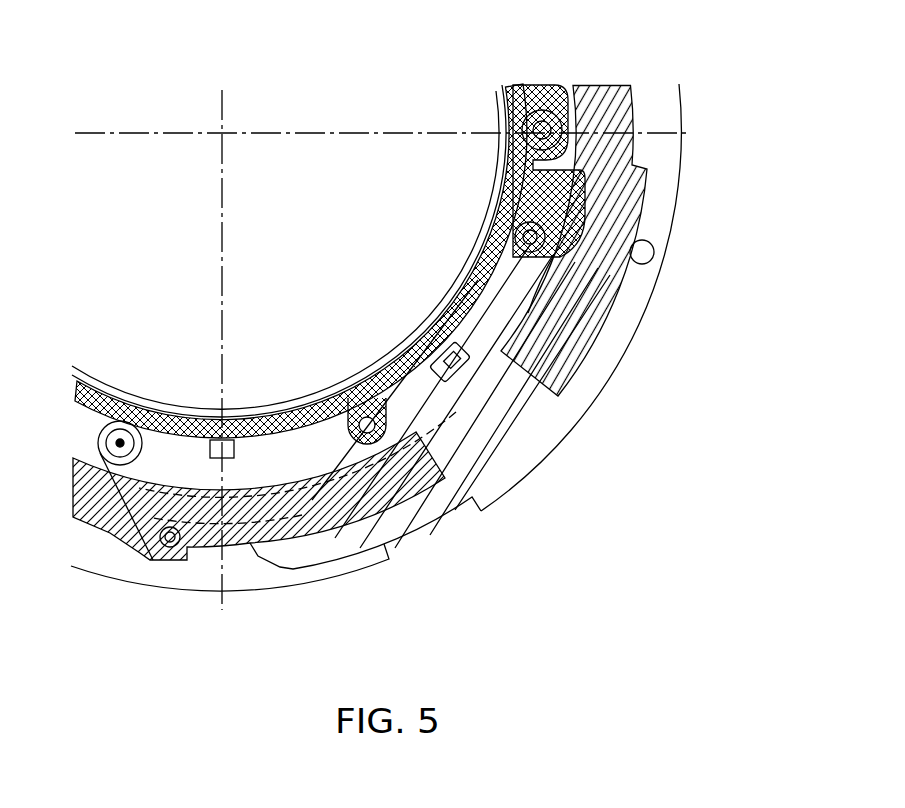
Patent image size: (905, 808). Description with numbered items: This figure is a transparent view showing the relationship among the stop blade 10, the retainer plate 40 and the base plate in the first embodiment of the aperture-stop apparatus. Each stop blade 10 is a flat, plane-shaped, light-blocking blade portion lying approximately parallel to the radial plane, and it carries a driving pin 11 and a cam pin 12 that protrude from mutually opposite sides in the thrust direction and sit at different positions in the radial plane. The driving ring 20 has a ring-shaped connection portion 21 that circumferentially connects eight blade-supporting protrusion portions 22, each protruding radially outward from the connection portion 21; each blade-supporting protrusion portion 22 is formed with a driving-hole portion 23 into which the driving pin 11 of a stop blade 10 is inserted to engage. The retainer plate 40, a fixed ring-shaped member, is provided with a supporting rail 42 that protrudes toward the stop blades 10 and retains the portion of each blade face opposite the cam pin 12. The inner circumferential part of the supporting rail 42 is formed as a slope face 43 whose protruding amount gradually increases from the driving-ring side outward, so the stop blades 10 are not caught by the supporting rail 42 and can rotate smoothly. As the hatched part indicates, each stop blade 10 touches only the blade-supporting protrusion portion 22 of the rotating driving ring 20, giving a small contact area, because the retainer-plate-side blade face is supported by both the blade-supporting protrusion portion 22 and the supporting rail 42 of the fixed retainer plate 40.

The stop blade 10 is at (332, 550).
The driving pin 11 is at (100, 450).
The cam pin 12 is at (153, 560).
The driving ring 20 is at (447, 297).
The connection portion 21 is at (477, 250).
The blade-supporting protrusion portion 22 is at (342, 393).
The driving-hole portion 23 is at (367, 385).
The retainer plate 40 is at (613, 347).
The supporting rail 42 is at (540, 380).
The slope face 43 is at (573, 280).